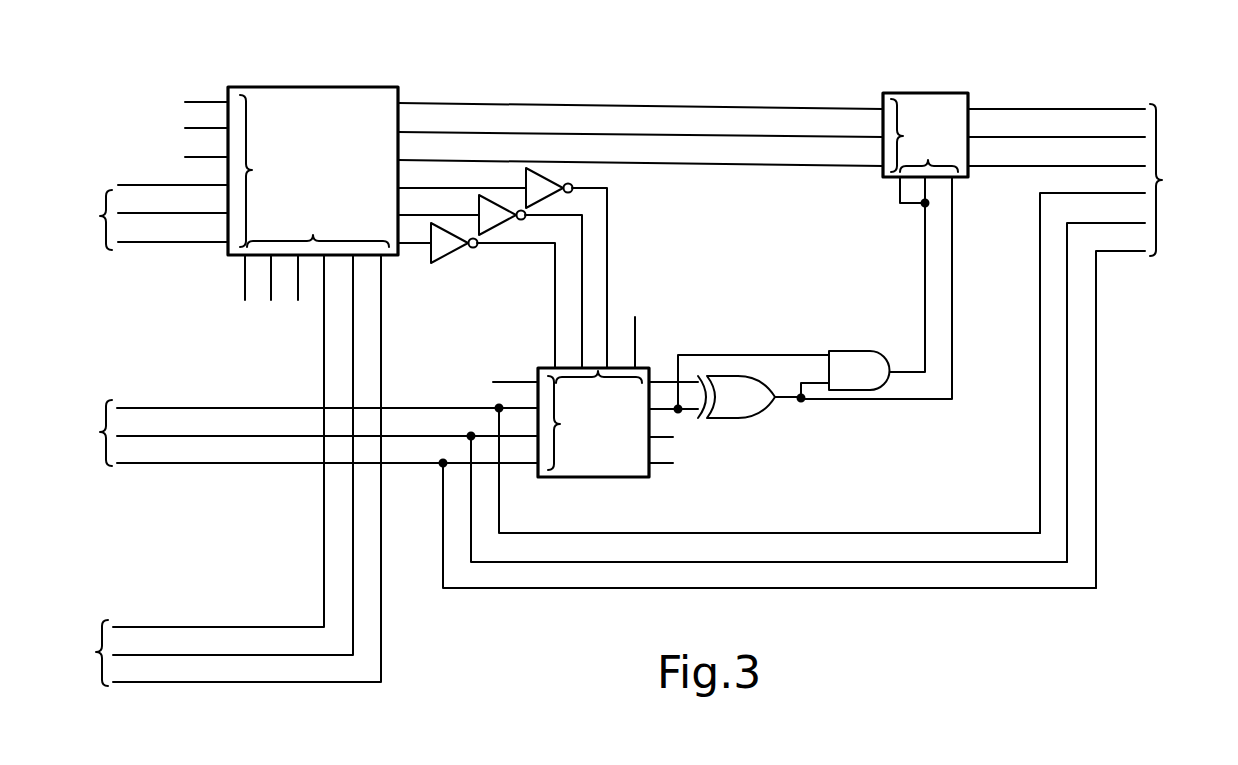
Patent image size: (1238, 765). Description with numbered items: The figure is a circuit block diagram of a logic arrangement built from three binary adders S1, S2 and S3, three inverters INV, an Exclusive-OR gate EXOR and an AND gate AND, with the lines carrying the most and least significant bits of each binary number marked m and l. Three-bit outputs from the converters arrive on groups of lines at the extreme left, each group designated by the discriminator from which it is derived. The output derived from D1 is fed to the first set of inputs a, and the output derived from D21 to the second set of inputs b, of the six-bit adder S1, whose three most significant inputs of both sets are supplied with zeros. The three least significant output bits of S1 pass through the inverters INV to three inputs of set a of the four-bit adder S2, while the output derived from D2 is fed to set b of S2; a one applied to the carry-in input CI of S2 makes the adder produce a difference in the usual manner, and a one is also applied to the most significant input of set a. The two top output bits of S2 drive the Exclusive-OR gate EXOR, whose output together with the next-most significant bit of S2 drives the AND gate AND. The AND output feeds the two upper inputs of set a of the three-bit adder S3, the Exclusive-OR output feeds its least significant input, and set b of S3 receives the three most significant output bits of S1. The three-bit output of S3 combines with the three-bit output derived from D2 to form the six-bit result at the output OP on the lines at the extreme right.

The six-bit binary adder S1 is at (534, 197).
The four-bit binary adder S2 is at (638, 389).
The three-bit binary adder S3 is at (924, 138).
The inverters INV is at (445, 256).
The Exclusive-OR gate EXOR is at (730, 404).
The AND gate AND is at (862, 373).
The carry-in input CI is at (537, 365).
The output OP is at (1085, 335).
The discriminator output lines D1 is at (220, 482).
The discriminator output lines D2 is at (574, 485).
The discriminator output lines D21 is at (138, 213).